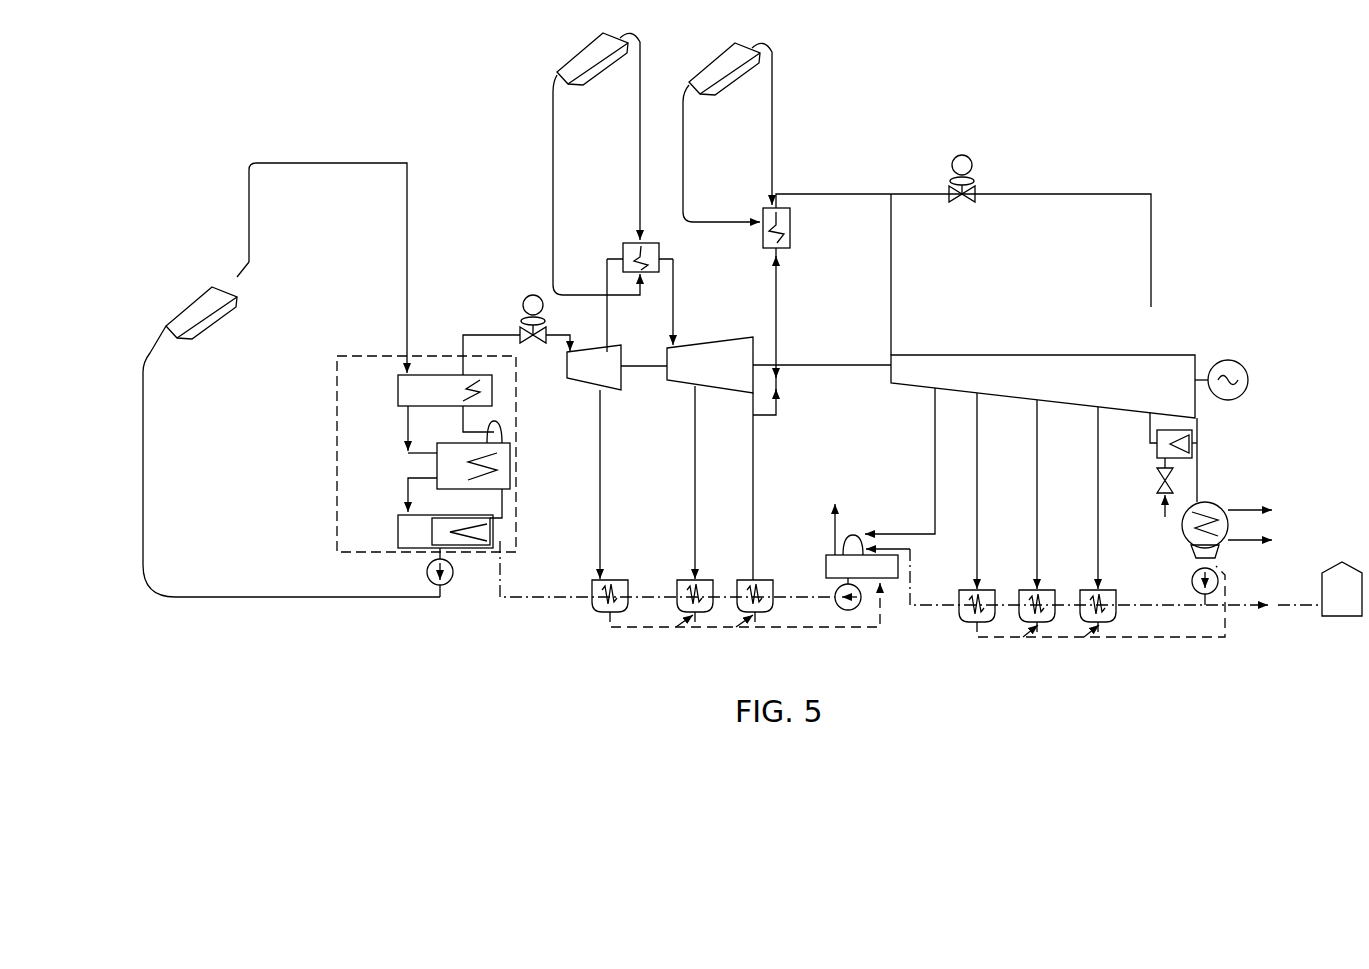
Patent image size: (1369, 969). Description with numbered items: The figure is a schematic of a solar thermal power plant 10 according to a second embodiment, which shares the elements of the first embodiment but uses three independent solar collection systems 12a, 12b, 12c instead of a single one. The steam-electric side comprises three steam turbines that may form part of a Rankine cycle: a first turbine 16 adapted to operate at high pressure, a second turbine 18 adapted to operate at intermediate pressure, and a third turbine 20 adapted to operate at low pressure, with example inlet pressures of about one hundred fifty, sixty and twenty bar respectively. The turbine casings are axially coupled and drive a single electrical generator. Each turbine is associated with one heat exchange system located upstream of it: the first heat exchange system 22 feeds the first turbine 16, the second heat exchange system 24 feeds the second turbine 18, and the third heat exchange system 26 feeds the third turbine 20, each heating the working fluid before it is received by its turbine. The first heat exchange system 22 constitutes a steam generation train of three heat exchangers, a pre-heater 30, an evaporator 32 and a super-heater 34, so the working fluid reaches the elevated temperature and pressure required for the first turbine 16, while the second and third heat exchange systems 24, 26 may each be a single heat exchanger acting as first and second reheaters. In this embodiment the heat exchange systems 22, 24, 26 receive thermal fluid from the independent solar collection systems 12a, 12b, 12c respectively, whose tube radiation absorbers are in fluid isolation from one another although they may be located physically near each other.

The solar thermal power plant 10 is at (1142, 82).
The solar collection system 12a is at (343, 163).
The solar collection system 12b is at (641, 60).
The solar collection system 12c is at (771, 78).
The first turbine 16 is at (614, 380).
The second turbine 18 is at (734, 380).
The third turbine 20 is at (1123, 390).
The first heat exchange system 22 is at (337, 447).
The second heat exchange system 24 is at (660, 258).
The third heat exchange system 26 is at (790, 215).
The pre-heater 30 is at (398, 536).
The evaporator 32 is at (453, 443).
The super-heater 34 is at (398, 388).